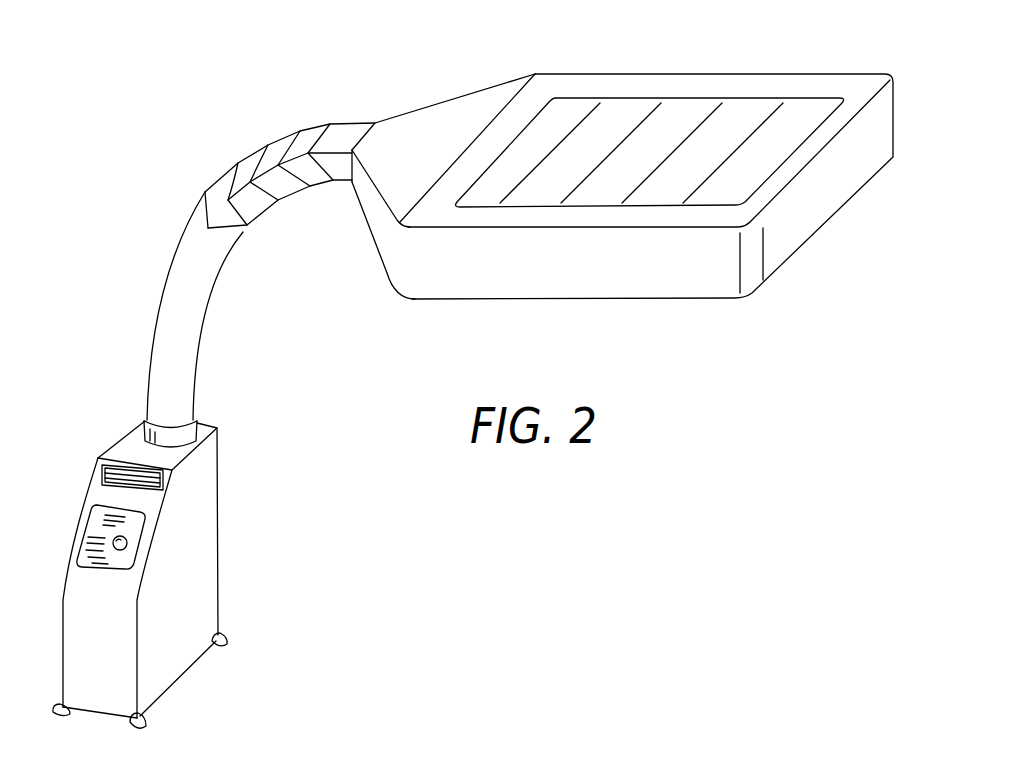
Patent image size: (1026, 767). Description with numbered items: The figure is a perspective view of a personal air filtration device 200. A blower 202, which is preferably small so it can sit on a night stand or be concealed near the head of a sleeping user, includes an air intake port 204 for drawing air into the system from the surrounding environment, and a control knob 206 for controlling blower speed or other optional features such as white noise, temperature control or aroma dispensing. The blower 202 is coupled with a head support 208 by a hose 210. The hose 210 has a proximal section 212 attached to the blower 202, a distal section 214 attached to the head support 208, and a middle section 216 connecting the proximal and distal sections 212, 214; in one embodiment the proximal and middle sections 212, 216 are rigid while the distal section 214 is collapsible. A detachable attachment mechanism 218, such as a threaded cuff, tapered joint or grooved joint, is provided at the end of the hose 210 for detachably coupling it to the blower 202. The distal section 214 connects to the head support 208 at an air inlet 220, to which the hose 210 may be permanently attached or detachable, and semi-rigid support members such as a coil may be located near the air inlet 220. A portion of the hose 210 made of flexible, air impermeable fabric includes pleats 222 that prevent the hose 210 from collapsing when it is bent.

The air filtration device 200 is at (163, 190).
The blower 202 is at (207, 580).
The air intake port 204 is at (117, 475).
The control knob 206 is at (118, 540).
The head support 208 is at (837, 83).
The hose 210 is at (202, 300).
The proximal section 212 is at (195, 392).
The distal section 214 is at (340, 130).
The middle section 216 is at (167, 280).
The detachable attachment mechanism 218 is at (145, 427).
The air inlet 220 is at (360, 130).
The pleats 222 is at (238, 170).